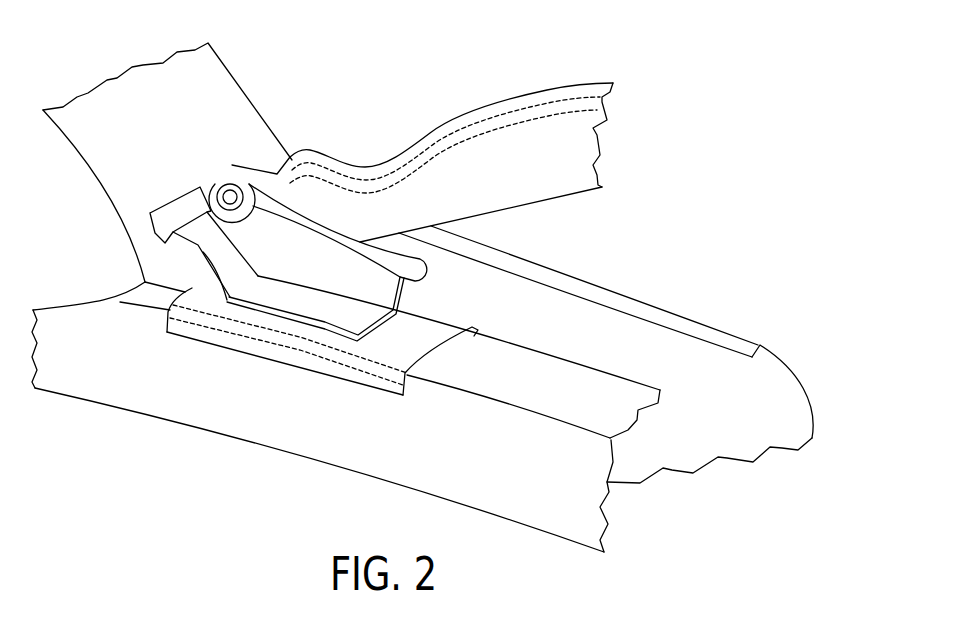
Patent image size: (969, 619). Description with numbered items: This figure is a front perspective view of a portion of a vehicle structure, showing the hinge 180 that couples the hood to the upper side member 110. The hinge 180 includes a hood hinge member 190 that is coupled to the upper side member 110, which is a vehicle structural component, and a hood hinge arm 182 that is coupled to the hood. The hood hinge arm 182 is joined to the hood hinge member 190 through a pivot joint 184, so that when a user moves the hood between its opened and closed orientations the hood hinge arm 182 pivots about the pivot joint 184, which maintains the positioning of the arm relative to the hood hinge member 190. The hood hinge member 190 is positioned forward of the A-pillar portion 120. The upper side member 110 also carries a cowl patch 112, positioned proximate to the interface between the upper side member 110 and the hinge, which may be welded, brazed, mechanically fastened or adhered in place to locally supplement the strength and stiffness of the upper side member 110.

The upper side member 110 is at (155, 442).
The cowl patch 112 is at (355, 375).
The A-pillar portion 120 is at (214, 81).
The hinge 180 is at (694, 185).
The hood hinge arms 182 is at (558, 199).
The pivot joints 184 is at (218, 184).
The hood hinge member 190 is at (171, 187).